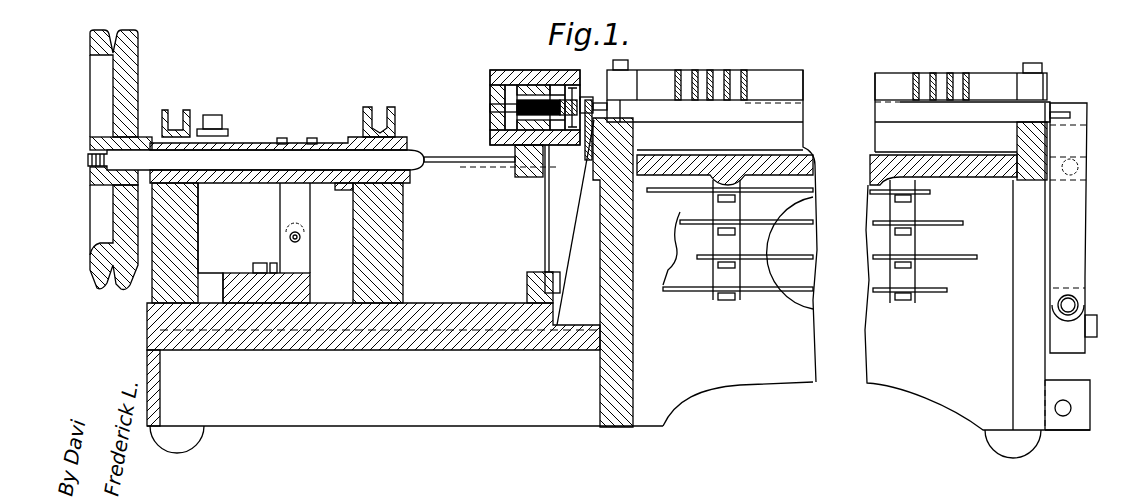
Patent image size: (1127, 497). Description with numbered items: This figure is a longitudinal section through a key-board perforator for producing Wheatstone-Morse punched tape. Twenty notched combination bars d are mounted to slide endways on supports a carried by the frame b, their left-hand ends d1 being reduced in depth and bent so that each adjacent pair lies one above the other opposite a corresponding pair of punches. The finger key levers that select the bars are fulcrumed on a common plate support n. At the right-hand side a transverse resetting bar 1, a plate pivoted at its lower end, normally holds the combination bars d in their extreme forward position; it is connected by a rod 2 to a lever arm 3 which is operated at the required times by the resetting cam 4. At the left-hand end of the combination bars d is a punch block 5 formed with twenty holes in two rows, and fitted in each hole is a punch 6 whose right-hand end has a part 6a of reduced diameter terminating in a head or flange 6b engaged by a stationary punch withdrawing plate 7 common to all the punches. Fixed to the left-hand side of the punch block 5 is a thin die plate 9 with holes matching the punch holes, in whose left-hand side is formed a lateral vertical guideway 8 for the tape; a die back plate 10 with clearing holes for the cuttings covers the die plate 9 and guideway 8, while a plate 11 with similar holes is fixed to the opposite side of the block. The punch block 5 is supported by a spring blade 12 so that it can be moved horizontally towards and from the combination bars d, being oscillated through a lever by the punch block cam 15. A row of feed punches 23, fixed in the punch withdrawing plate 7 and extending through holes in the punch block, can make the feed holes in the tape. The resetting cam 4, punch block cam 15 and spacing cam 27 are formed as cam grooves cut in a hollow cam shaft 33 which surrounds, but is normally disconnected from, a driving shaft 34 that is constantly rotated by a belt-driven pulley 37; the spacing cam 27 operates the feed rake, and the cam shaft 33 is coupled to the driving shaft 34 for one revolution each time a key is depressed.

The belt driven pulley 37 is at (138, 48).
The driving shaft 34 is at (256, 160).
The rod 2 is at (431, 163).
The resetting cam 4 is at (293, 140).
The spacing cam 27 is at (279, 143).
The punch block cam 15 is at (323, 143).
The hollow cam shaft 33 is at (243, 188).
The lever arm 3 is at (295, 228).
The frame b is at (633, 314).
The punch 6 is at (507, 70).
The die back plate 10 is at (490, 72).
The die plate 9 is at (493, 70).
The punch block 5 is at (527, 70).
The plate 11 is at (560, 70).
The lateral vertical guideway 8 is at (490, 100).
The feed punches 23 is at (490, 106).
The part of reduced diameter 6a is at (573, 76).
The punch withdrawing plate 7 is at (583, 165).
The head or flange 6b is at (535, 178).
The spring blade 12 is at (545, 237).
The left hand ends of combination bars d1 is at (598, 97).
The combination bars d is at (903, 114).
The supports a is at (637, 125).
The plate support n is at (680, 216).
The resetting bar 1 is at (1071, 266).